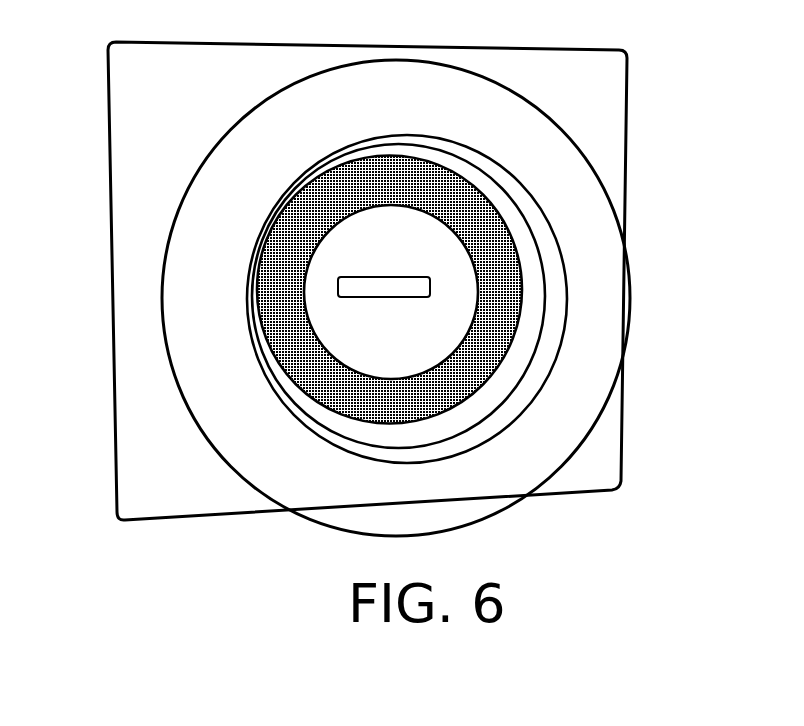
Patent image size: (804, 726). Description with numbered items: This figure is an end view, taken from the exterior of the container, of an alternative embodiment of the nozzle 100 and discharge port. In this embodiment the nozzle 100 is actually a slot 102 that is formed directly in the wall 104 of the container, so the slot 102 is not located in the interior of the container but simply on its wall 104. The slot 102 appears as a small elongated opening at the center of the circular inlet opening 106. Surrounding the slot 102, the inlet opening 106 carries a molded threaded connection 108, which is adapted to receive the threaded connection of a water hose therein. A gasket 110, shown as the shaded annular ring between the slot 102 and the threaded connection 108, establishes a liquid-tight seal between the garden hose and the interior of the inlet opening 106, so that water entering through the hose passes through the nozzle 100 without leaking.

The nozzle 100 is at (450, 262).
The slot 102 is at (430, 286).
The wall 104 is at (613, 177).
The inlet opening 106 is at (553, 160).
The molded threaded connection 108 is at (262, 376).
The gasket 110 is at (484, 382).